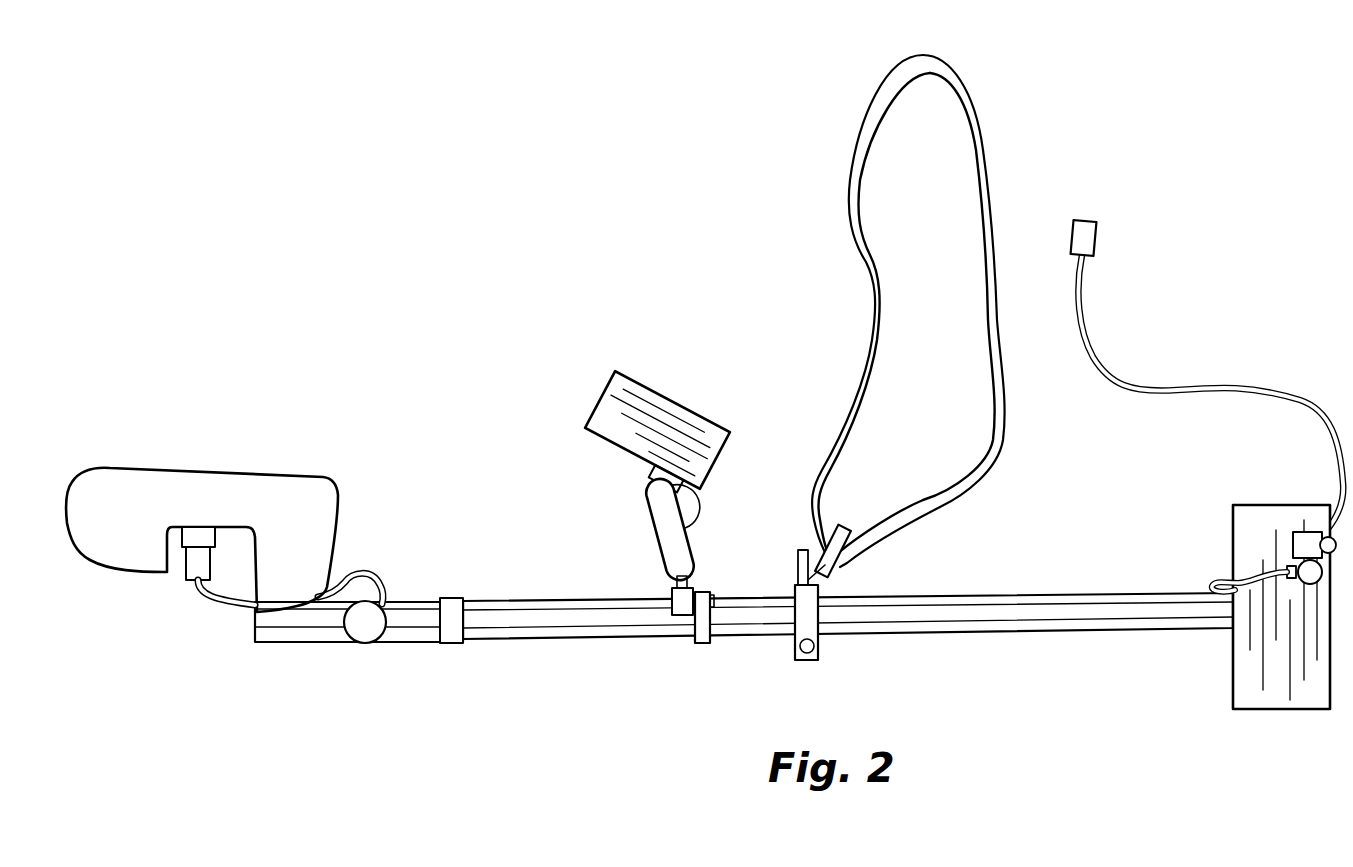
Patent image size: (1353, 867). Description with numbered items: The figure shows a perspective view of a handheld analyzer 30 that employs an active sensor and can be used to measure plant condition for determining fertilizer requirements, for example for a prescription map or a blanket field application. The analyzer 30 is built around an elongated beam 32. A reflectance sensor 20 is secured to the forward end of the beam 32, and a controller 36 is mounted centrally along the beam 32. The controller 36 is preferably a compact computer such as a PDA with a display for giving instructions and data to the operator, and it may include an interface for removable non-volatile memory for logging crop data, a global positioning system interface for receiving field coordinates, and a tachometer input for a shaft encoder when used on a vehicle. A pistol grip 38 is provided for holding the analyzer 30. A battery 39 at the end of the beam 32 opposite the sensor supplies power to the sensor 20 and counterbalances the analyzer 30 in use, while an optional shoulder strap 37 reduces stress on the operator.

The reflectance sensor 20 is at (226, 478).
The handheld analyzer 30 is at (413, 362).
The elongated beam 32 is at (1047, 618).
The controller 36 is at (648, 400).
The shoulder strap 37 is at (977, 108).
The pistol grip 38 is at (682, 557).
The battery 39 is at (1267, 683).